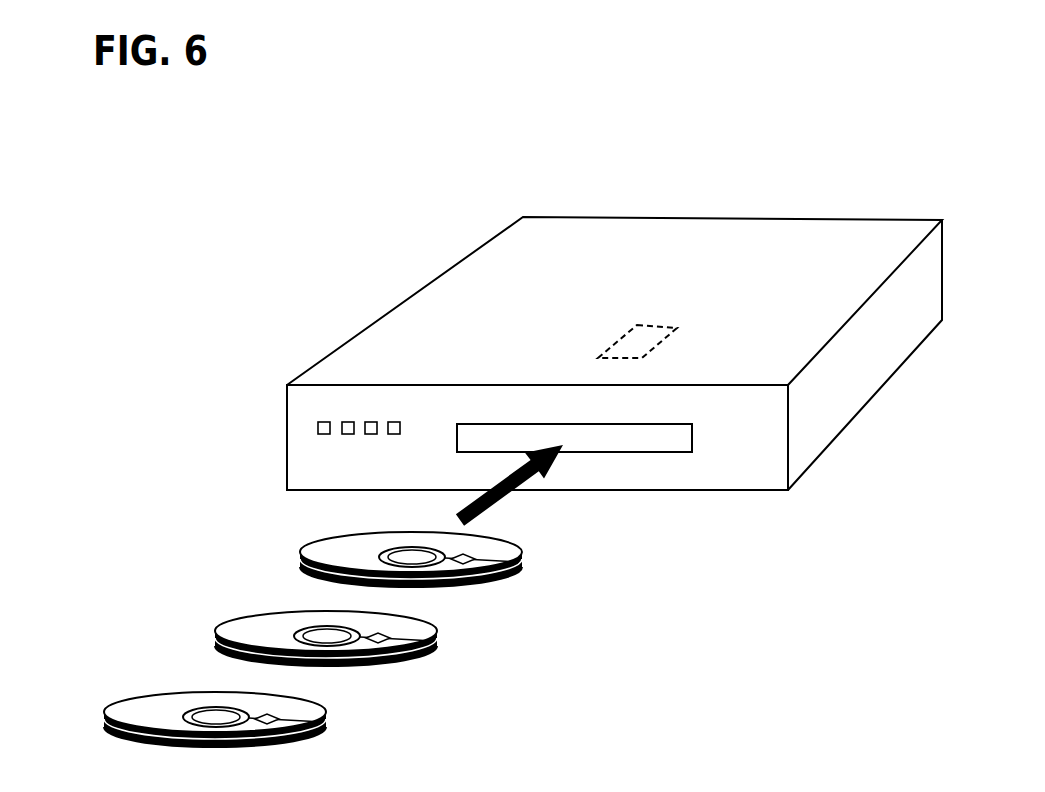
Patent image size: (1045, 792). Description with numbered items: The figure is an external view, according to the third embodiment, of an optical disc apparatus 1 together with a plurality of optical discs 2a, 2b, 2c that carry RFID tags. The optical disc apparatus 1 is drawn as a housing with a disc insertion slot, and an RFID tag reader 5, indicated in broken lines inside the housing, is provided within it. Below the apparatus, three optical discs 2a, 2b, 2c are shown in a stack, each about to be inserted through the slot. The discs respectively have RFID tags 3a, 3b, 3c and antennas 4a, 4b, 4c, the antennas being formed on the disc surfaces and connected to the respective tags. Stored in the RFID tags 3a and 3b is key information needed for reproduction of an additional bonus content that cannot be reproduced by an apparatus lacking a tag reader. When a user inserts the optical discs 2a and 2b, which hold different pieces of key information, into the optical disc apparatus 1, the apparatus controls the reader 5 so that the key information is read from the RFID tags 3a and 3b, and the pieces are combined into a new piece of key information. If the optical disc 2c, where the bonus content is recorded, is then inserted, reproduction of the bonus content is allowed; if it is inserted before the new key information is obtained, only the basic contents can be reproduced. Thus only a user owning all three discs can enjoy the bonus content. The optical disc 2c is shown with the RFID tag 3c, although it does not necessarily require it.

The optical disc apparatus 1 is at (693, 218).
The optical disc 2a is at (373, 554).
The optical disc 2b is at (291, 633).
The optical disc 2c is at (183, 714).
The RFID tag 3a is at (523, 575).
The RFID tag 3b is at (438, 655).
The RFID tag 3c is at (327, 735).
The antenna 4a is at (370, 533).
The antenna 4b is at (283, 609).
The antenna 4c is at (174, 694).
The RFID tag reader 5 is at (612, 344).